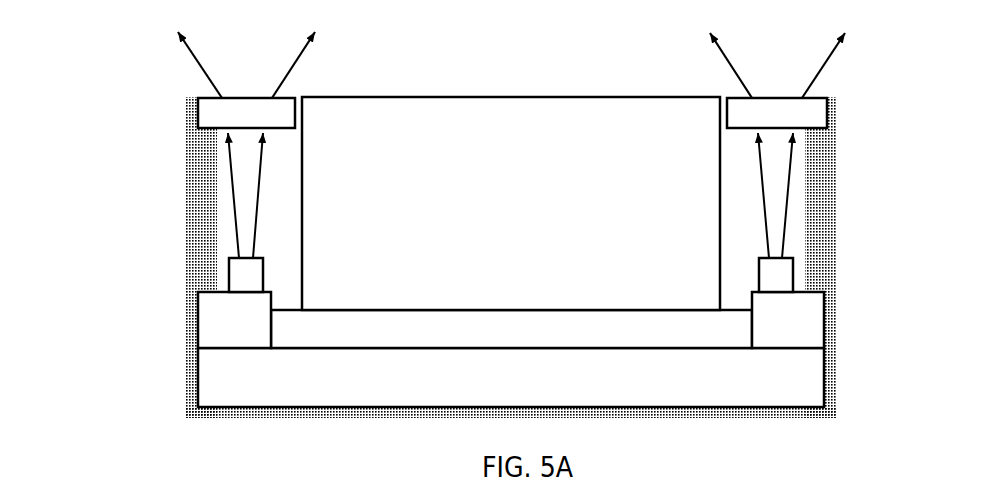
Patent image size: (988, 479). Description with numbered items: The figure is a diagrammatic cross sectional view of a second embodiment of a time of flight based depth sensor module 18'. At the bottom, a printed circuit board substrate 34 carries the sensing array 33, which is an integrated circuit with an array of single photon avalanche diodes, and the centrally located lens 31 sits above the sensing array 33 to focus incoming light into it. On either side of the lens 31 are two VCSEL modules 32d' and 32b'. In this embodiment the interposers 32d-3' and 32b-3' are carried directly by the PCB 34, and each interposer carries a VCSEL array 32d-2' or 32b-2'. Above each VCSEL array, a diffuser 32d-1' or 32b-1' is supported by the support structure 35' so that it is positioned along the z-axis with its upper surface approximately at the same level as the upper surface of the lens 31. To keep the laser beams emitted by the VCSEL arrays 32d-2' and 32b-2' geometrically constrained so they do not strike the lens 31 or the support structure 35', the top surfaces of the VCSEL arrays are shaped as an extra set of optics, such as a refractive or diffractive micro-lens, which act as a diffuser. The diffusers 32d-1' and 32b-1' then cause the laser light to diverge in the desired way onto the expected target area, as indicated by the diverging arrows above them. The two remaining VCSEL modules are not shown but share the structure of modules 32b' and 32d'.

The depth sensor module 18' is at (477, 225).
The lens 31 is at (427, 97).
The VCSEL module 32d' is at (168, 190).
The diffuser 32d-1' is at (214, 80).
The VCSEL array 32d-2' is at (187, 212).
The interposer 32d-3' is at (189, 319).
The VCSEL module 32b' is at (821, 190).
The diffuser 32b-1' is at (806, 80).
The VCSEL array 32b-2' is at (833, 212).
The interposer 32b-3' is at (830, 320).
The sensing array 33 is at (268, 330).
The printed circuit board substrate 34 is at (197, 378).
The support structure 35' is at (510, 257).